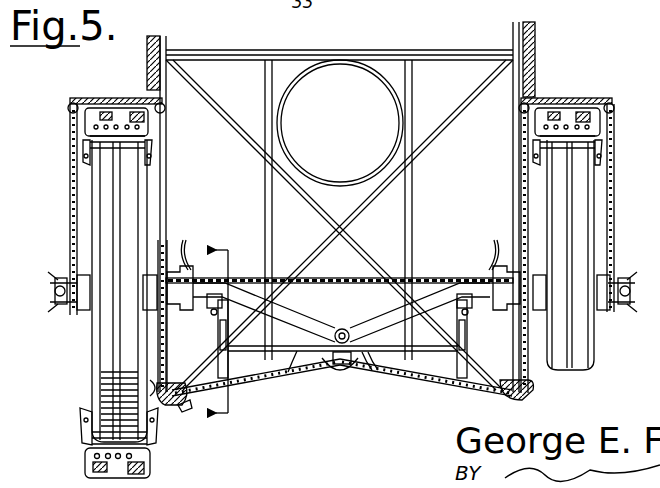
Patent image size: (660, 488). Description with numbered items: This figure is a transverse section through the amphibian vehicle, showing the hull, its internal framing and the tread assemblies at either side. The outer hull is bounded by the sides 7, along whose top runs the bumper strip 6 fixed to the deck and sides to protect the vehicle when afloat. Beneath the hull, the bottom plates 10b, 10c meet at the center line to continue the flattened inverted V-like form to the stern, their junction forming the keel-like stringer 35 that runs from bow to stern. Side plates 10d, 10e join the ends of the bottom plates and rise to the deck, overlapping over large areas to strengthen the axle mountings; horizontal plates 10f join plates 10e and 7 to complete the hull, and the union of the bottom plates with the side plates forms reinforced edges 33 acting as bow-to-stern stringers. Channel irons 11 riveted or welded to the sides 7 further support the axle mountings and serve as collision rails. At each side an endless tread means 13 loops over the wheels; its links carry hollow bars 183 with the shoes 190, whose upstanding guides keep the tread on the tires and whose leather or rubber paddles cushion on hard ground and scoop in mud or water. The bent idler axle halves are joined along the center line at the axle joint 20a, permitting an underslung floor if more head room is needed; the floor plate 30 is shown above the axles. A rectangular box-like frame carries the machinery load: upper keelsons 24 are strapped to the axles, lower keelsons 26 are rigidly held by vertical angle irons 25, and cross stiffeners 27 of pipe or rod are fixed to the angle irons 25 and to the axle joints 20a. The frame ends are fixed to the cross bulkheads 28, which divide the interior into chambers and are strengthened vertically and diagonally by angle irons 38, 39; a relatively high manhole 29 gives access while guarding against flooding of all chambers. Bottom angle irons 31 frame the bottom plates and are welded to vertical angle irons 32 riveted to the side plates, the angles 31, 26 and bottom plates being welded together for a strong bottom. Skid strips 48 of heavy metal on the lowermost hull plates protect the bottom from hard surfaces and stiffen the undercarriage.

The bumper strip 6 is at (214, 335).
The sides 7 is at (73, 184).
The bottom plate 10b is at (238, 390).
The bottom plate 10c is at (463, 390).
The side plate 10d is at (166, 348).
The side plate 10e is at (523, 223).
The horizontal plate 10f is at (587, 97).
The channel iron 11 is at (65, 272).
The endless tread means 13 is at (84, 455).
The axle joint 20a is at (356, 312).
The upper keelsons 24 is at (208, 310).
The vertical angle irons 25 is at (468, 328).
The lower keelsons 26 is at (452, 392).
The cross stiffeners 27 is at (330, 355).
The cross bulkheads 28 is at (220, 158).
The manhole 29 is at (333, 128).
The floor plate 30 is at (453, 277).
The bottom angle irons 31 is at (370, 360).
The vertical angle irons 32 is at (513, 185).
The reinforced edges 33 is at (158, 400).
The keel-like stringer 35 is at (343, 378).
The vertical angle irons 38 is at (265, 82).
The diagonal angle irons 39 is at (312, 258).
The skid strip 48 is at (185, 410).
The hollow bars 183 is at (90, 140).
The shoes 190 is at (113, 110).